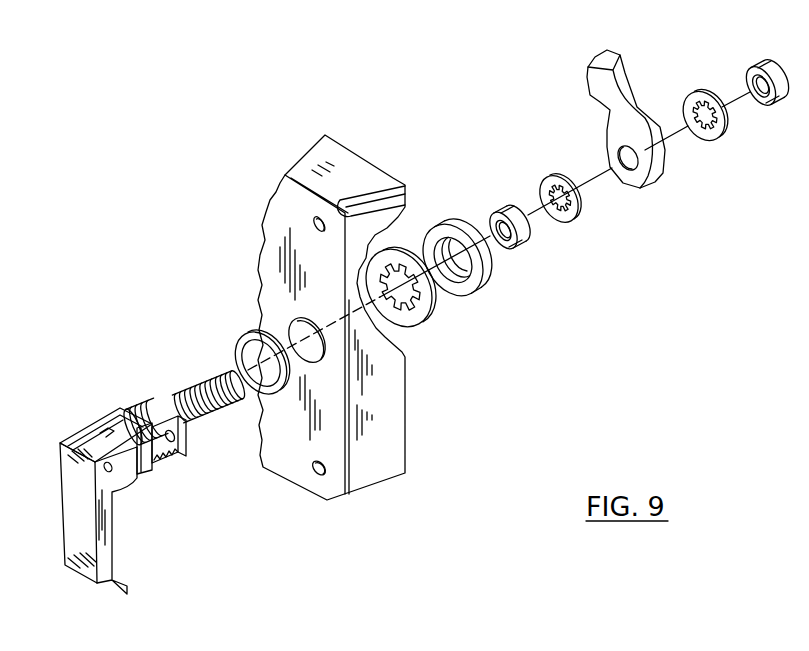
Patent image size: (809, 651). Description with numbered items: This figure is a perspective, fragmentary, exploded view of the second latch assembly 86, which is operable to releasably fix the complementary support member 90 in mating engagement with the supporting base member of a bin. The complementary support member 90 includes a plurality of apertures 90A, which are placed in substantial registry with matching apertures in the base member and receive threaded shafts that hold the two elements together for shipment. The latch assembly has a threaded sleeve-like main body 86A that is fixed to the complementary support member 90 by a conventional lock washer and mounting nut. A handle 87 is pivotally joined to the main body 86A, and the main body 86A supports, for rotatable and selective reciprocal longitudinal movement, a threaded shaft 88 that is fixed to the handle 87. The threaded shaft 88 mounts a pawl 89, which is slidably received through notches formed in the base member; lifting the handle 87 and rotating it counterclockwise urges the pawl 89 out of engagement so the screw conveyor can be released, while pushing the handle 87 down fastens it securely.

The second latch assembly 86 is at (127, 404).
The threaded sleeve-like main body 86A is at (148, 470).
The handle 87 is at (80, 543).
The threaded shaft 88 is at (215, 382).
The pawl 89 is at (623, 88).
The complementary support member 90 is at (347, 163).
The apertures 90A is at (324, 462).